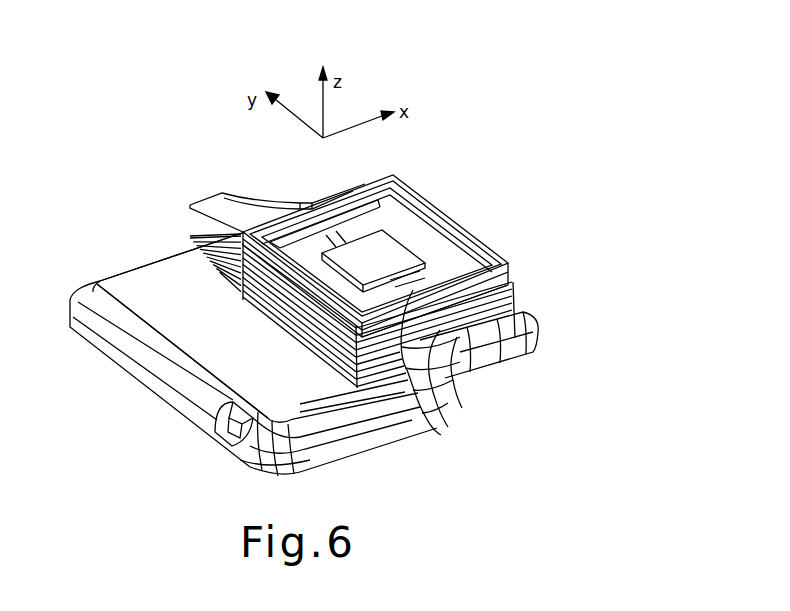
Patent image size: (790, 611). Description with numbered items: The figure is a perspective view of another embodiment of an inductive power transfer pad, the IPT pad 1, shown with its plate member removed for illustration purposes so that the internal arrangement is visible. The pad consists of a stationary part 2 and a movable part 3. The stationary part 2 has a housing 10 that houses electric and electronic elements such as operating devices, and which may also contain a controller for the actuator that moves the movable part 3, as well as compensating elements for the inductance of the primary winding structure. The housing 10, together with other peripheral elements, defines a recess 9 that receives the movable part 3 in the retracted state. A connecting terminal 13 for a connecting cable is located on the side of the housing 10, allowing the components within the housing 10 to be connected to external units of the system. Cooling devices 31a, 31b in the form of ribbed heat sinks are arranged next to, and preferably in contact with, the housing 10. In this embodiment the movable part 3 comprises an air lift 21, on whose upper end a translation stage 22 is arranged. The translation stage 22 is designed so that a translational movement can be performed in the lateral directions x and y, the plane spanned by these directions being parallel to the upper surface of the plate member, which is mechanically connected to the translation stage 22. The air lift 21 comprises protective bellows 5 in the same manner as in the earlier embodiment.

The IPT pad 1 is at (371, 443).
The stationary part 2 is at (130, 270).
The movable part 3 is at (507, 278).
The protective bellows 5 is at (473, 333).
The recess 9 is at (437, 387).
The housing 10 is at (167, 278).
The connecting terminal 13 is at (233, 435).
The air lift 21 is at (520, 303).
The translation stage 22 is at (387, 255).
The cooling device 31a is at (430, 413).
The cooling device 31b is at (220, 257).